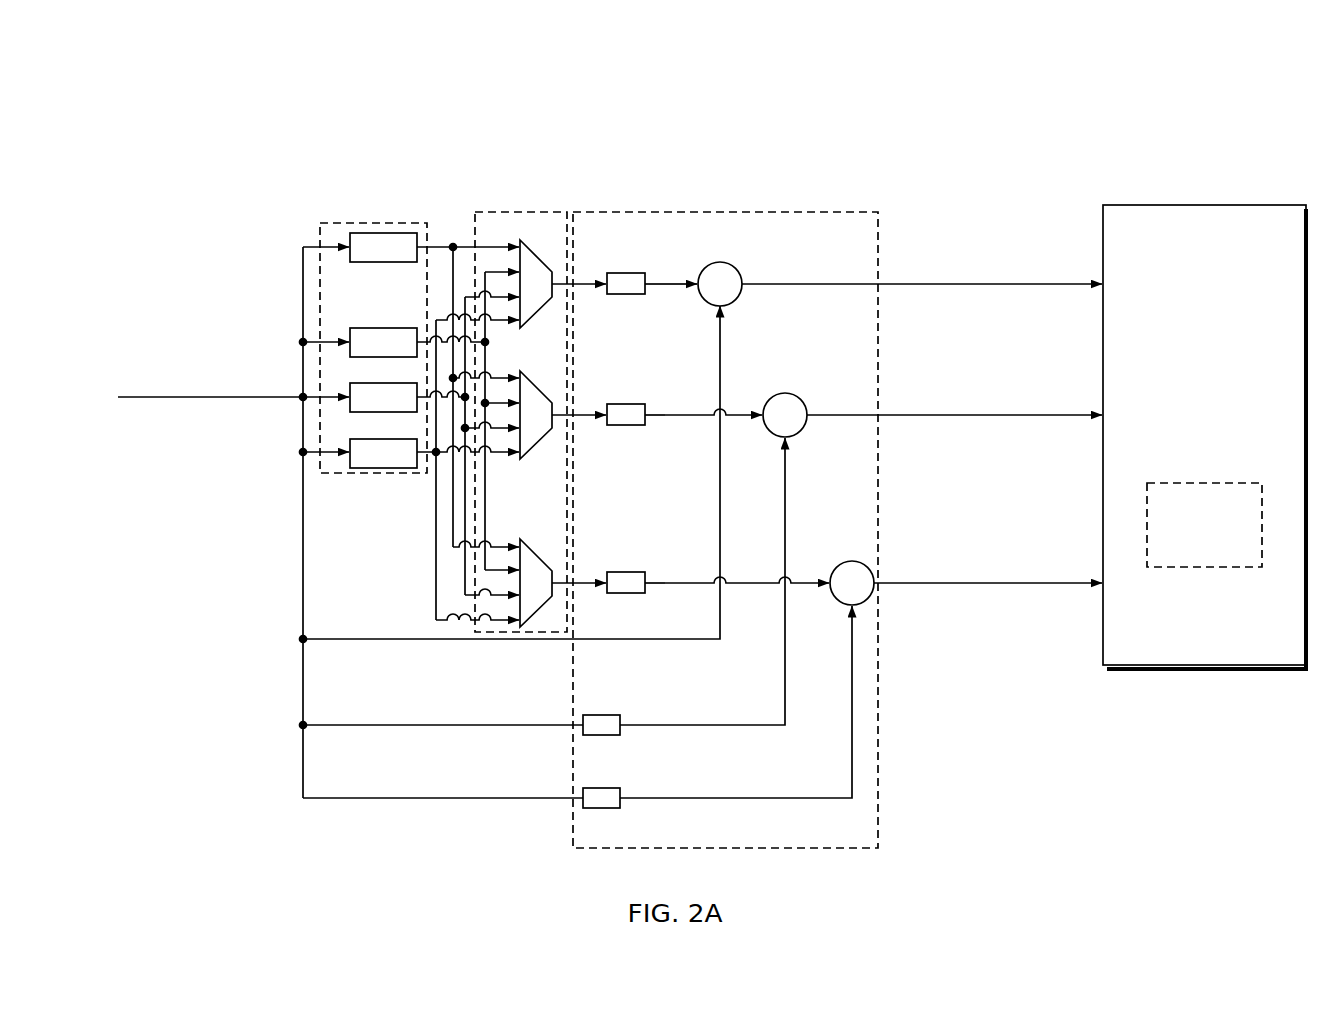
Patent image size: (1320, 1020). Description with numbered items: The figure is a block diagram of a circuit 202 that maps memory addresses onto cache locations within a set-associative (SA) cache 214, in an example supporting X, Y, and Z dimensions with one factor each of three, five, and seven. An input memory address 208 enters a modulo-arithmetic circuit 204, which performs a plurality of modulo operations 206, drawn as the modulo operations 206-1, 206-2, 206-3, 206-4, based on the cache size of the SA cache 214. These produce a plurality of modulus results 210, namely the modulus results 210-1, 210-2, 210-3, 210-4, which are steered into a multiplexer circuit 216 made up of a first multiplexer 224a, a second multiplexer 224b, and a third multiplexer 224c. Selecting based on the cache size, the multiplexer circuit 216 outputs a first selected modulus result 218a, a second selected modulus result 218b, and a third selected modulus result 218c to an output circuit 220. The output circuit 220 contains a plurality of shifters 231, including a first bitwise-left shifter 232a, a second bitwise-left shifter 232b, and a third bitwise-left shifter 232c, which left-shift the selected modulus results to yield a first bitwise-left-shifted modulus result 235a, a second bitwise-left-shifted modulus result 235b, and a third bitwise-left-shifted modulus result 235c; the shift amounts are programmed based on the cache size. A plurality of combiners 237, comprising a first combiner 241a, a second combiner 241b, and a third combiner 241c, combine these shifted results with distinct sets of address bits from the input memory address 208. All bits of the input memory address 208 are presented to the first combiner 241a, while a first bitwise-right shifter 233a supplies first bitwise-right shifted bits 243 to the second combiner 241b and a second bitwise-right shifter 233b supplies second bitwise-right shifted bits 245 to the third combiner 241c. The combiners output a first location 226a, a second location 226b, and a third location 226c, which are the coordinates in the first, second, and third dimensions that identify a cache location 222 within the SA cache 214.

The circuit 202 is at (1141, 58).
The modulo-arithmetic circuit 204 is at (345, 222).
The plurality of modulo operations 206 is at (319, 231).
The modulo operation 206-1 is at (350, 258).
The modulo operation 206-2 is at (350, 353).
The modulo operation 206-3 is at (350, 408).
The modulo operation 206-4 is at (350, 465).
The input memory address 208 is at (130, 397).
The plurality of modulus results 210 is at (414, 518).
The modulus result 210-1 is at (450, 244).
The modulus result 210-2 is at (497, 562).
The modulus result 210-3 is at (464, 581).
The modulus result 210-4 is at (435, 590).
The SA cache 214 is at (1189, 391).
The multiplexer circuit 216 is at (521, 200).
The first selected modulus result 218a is at (588, 276).
The second selected modulus result 218b is at (590, 407).
The third selected modulus result 218c is at (586, 575).
The output circuit 220 is at (748, 200).
The cache location 222 is at (1189, 560).
The first multiplexer 224a is at (540, 240).
The second multiplexer 224b is at (545, 373).
The third multiplexer 224c is at (545, 541).
The first location 226a is at (958, 283).
The second location 226b is at (958, 415).
The third location 226c is at (958, 583).
The plurality of shifters 231 is at (633, 224).
The first bitwise-left shifter 232a is at (643, 296).
The second bitwise-left shifter 232b is at (643, 397).
The third bitwise-left shifter 232c is at (639, 570).
The first bitwise-right shifter 233a is at (607, 715).
The second bitwise-right shifter 233b is at (607, 788).
The first bitwise-left-shifted modulus result 235a is at (665, 283).
The second bitwise-left-shifted modulus result 235b is at (665, 414).
The third bitwise-left-shifted modulus result 235c is at (665, 582).
The plurality of combiners 237 is at (816, 234).
The first combiner 241a is at (733, 265).
The second combiner 241b is at (785, 393).
The third combiner 241c is at (852, 561).
The first bitwise-right shifted bits 243 is at (758, 733).
The second bitwise-right shifted bits 245 is at (758, 806).